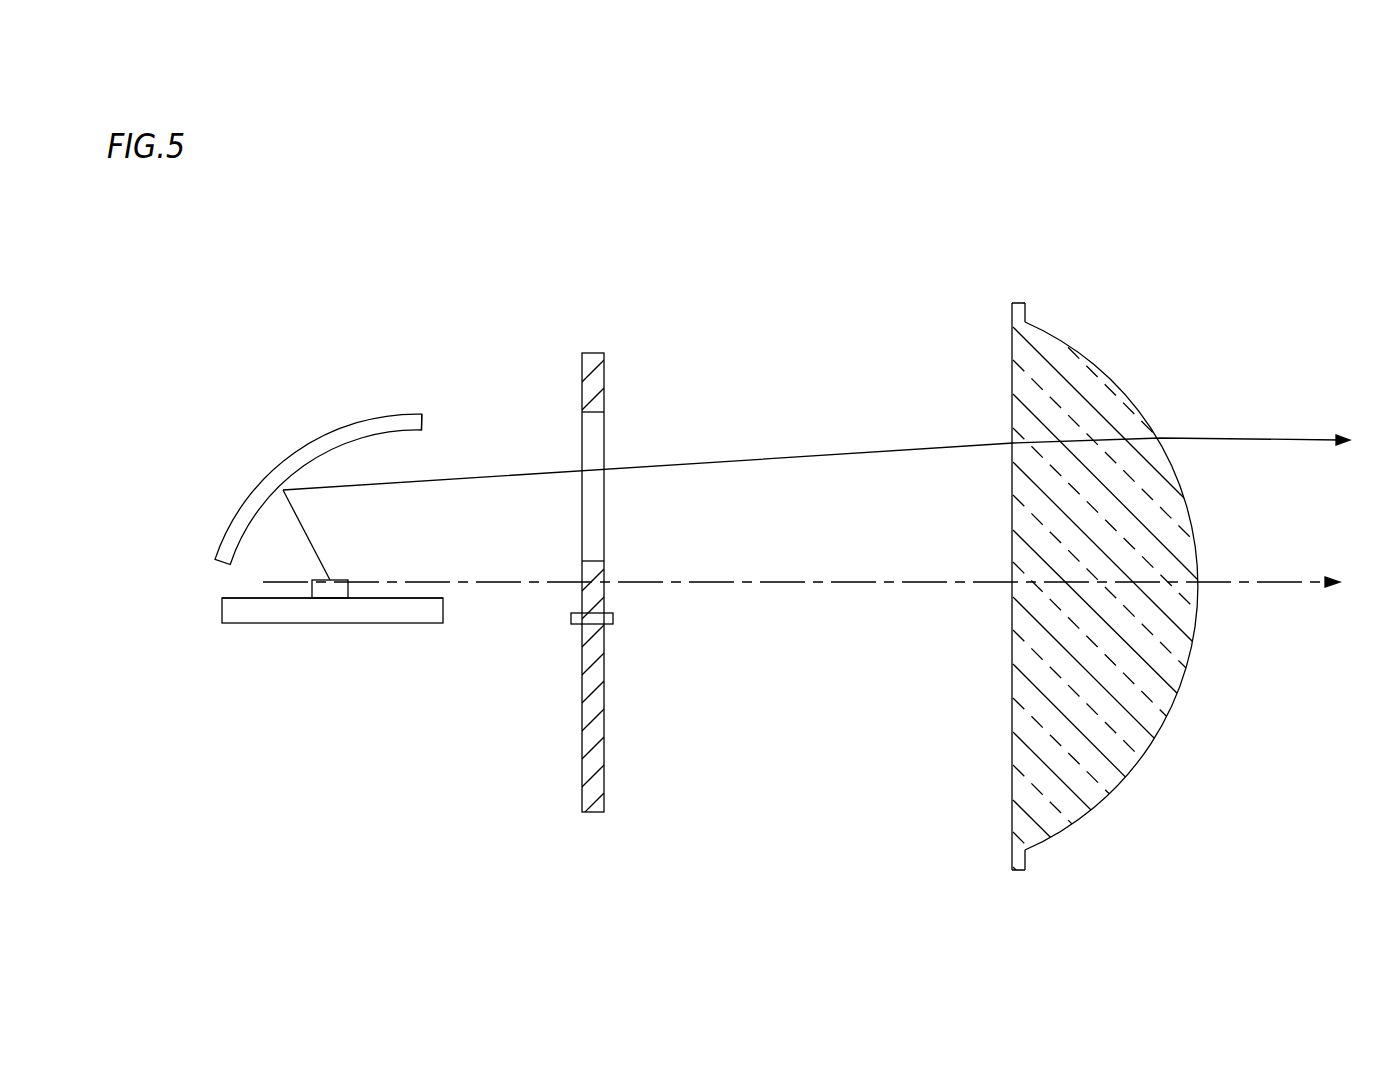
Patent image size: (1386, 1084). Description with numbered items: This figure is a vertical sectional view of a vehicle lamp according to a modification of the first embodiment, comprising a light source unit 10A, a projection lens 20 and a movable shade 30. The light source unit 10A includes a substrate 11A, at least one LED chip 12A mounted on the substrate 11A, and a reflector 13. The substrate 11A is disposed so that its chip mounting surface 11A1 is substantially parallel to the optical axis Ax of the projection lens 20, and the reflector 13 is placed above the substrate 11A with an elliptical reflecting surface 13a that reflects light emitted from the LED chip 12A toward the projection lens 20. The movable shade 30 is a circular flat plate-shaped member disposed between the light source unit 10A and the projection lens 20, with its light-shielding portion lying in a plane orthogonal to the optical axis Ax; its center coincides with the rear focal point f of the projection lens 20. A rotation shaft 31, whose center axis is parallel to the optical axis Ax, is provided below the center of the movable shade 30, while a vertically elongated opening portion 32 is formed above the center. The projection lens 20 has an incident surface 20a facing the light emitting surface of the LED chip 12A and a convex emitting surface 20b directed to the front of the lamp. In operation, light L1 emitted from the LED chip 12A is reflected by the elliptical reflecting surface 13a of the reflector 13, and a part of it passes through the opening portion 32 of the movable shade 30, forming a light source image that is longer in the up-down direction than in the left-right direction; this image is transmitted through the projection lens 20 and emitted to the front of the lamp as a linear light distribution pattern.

The light source unit 10A is at (188, 318).
The reflector 13 is at (308, 432).
The elliptical reflecting surface 13a is at (394, 434).
The LED chip 12A is at (337, 582).
The substrate 11A is at (305, 617).
The chip mounting surface 11A1 is at (240, 598).
The movable shade 30 is at (545, 368).
The opening portion 32 is at (603, 420).
The rotation shaft 31 is at (613, 619).
The rear focal point f is at (605, 582).
The light L1 is at (920, 447).
The optical axis Ax is at (819, 583).
The projection lens 20 is at (1128, 375).
The incident surface 20a is at (1010, 755).
The emitting surface 20b is at (1140, 770).